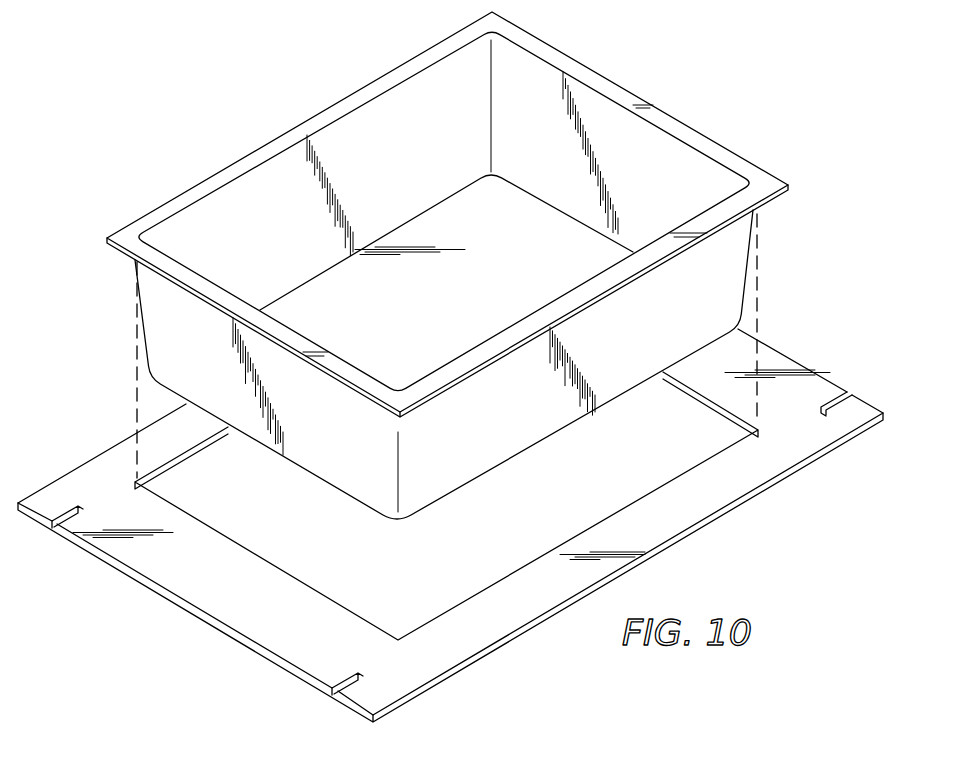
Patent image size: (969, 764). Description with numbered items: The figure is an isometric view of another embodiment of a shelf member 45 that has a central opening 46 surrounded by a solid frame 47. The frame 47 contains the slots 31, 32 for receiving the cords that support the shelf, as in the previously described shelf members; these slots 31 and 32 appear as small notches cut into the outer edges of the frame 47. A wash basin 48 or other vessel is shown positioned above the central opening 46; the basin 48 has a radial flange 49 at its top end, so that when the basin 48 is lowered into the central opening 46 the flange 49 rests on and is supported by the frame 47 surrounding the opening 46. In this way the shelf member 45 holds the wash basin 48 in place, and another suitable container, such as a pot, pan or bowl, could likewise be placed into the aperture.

The slot 31 is at (56, 520).
The slot 32 is at (340, 686).
The shelf member 45 is at (88, 426).
The central opening 46 is at (245, 524).
The solid frame 47 is at (450, 525).
The wash basin 48 is at (633, 102).
The radial flange 49 is at (428, 265).